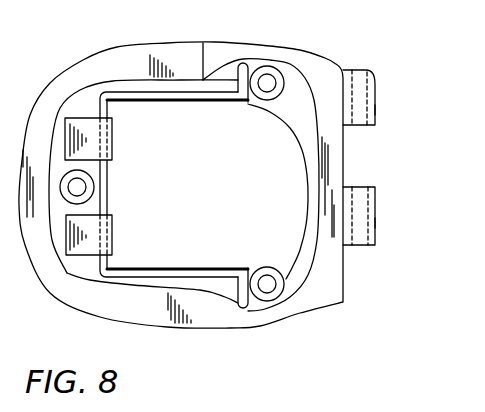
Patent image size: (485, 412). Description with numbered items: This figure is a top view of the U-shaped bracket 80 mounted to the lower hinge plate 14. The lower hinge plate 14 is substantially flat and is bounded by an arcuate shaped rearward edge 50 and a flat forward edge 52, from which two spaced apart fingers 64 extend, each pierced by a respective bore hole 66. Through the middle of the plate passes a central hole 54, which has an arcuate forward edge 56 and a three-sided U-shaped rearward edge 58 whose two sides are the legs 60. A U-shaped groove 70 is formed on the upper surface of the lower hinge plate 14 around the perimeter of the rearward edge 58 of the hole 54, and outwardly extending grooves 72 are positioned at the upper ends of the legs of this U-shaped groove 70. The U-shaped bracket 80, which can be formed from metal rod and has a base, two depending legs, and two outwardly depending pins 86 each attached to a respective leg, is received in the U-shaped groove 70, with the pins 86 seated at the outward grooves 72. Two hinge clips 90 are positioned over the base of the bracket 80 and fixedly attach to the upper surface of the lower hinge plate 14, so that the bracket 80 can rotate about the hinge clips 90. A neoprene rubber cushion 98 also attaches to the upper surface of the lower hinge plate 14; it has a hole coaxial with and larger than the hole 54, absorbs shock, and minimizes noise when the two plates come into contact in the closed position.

The lower hinge plate 14 is at (152, 43).
The arcuate shaped rearward edge 50 is at (38, 280).
The flat forward edge 52 is at (357, 90).
The central hole 54 is at (254, 105).
The arcuate forward edge 56 is at (307, 175).
The U-shaped rearward edge 58 is at (173, 104).
The legs 60 is at (129, 106).
The fingers 64 is at (376, 97).
The bore holes 66 is at (376, 110).
The U-shaped groove 70 is at (238, 304).
The outwardly extending grooves 72 is at (247, 68).
The U-shaped bracket 80 is at (203, 50).
The outwardly depending pins 86 is at (253, 104).
The hinge clips 90 is at (82, 118).
The neoprene rubber cushion 98 is at (126, 68).